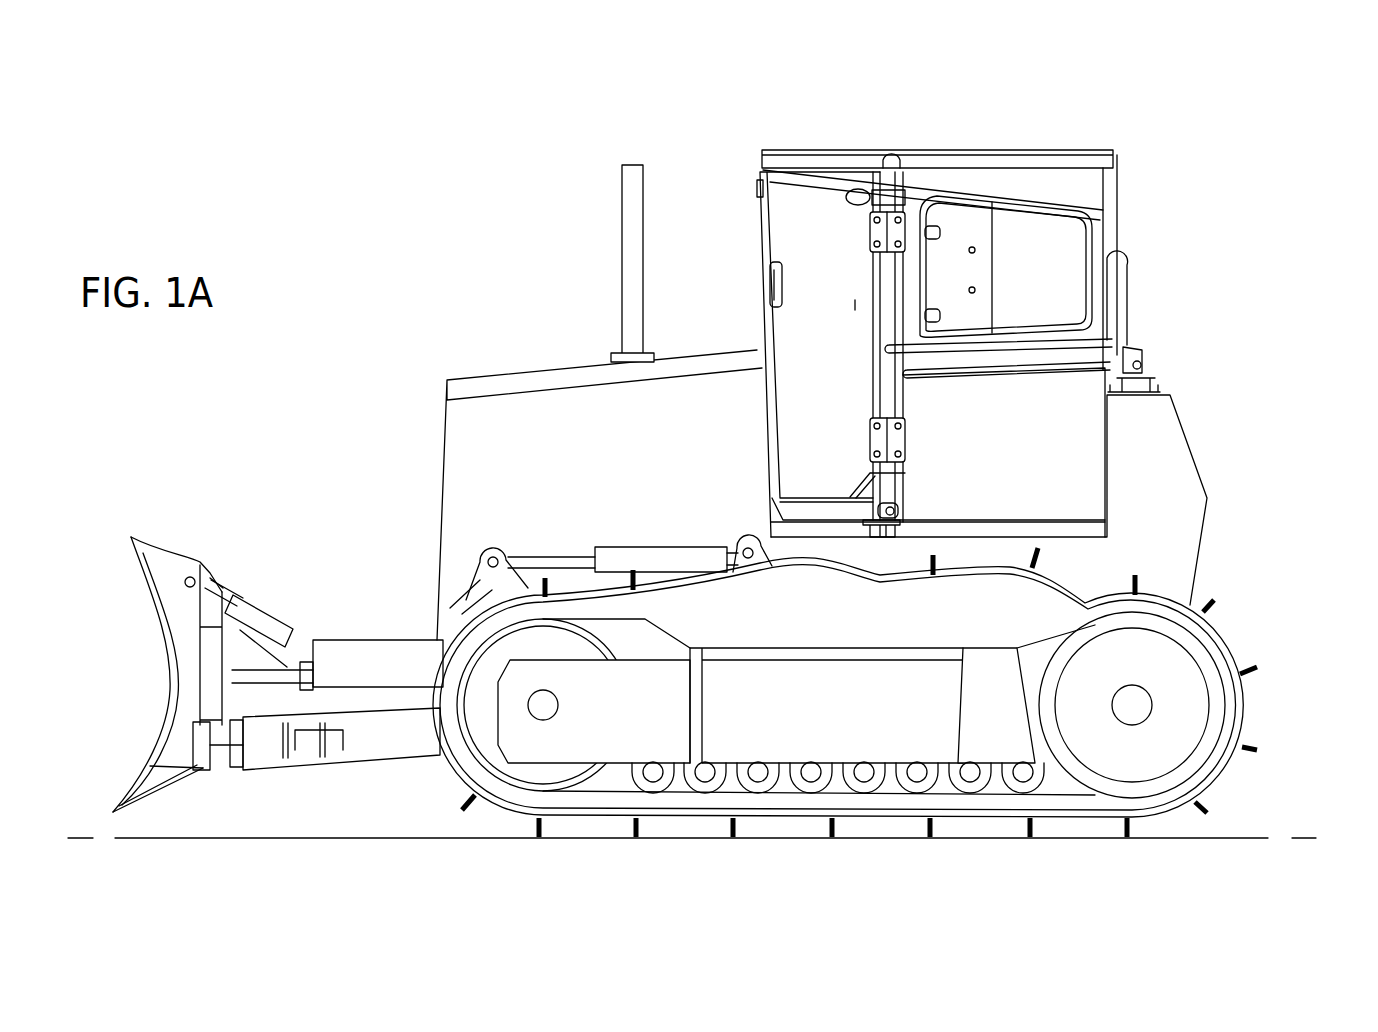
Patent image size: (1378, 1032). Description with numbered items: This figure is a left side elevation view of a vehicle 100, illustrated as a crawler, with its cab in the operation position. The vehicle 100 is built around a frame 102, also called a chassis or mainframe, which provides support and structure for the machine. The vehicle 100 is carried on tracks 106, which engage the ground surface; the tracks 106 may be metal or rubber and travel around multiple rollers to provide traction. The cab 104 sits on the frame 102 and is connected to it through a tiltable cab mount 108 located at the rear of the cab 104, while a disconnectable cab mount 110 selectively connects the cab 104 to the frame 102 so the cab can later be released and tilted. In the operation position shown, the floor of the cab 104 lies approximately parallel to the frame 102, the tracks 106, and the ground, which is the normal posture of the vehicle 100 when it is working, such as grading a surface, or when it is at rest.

The vehicle 100 is at (413, 121).
The frame 102 is at (1146, 559).
The cab 104 is at (888, 98).
The tracks 106 is at (1266, 641).
The tiltable cab mount 108 is at (1137, 362).
The disconnectable cab mount 110 is at (884, 533).